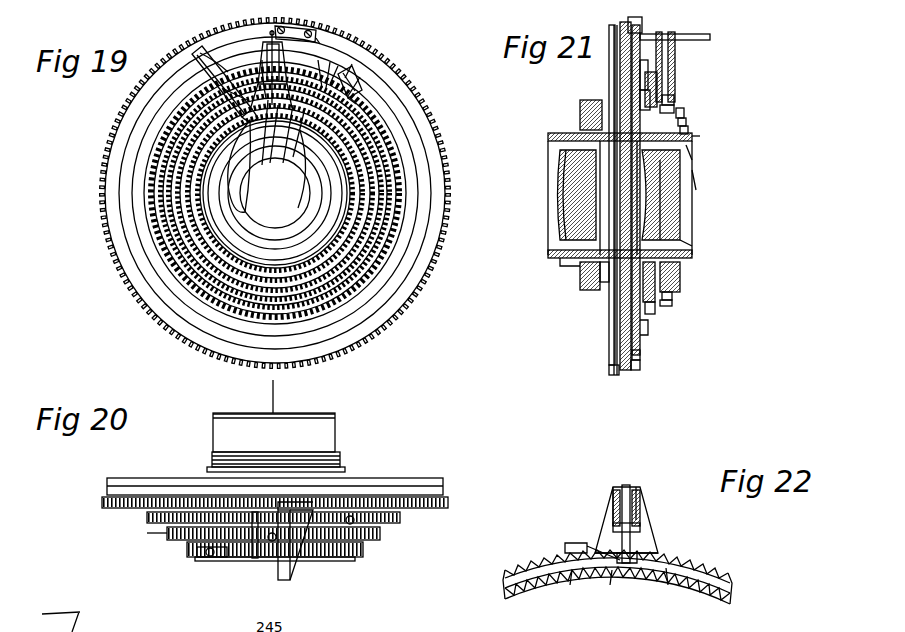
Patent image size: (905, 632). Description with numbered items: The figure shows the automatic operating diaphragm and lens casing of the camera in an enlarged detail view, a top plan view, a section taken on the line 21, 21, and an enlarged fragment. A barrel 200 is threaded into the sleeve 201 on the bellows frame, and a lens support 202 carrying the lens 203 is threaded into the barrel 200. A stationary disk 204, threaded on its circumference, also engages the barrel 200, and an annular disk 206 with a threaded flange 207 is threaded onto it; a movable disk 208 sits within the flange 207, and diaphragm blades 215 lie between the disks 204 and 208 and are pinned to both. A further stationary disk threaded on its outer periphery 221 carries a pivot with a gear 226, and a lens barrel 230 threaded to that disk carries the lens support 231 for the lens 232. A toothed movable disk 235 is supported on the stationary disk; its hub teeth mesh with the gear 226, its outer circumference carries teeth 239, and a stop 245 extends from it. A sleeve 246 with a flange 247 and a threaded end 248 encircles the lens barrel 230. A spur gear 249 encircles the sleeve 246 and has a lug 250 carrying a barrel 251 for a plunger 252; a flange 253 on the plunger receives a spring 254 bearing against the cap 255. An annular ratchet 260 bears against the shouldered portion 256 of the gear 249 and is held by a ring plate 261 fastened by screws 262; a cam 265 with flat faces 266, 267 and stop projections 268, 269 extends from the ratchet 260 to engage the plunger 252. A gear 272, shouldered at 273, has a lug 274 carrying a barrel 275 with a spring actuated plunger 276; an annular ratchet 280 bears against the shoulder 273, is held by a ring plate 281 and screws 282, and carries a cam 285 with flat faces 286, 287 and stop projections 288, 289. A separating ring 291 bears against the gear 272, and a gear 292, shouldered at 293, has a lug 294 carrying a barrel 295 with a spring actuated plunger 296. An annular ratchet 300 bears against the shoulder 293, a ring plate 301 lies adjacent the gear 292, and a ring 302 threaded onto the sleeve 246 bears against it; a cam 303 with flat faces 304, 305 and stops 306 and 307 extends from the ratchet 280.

In FIG. 20, the section line 21 is at (273, 395).
In FIG. 20, the barrel 200 is at (336, 432).
In FIG. 21, the barrel 200 is at (590, 262).
In FIG. 20, the sleeve 201 is at (345, 467).
In FIG. 21, the sleeve 201 is at (586, 286).
In FIG. 20, the lens support 202 is at (300, 413).
In FIG. 21, the lens support 202 is at (552, 141).
In FIG. 21, the lens 203 is at (560, 205).
In FIG. 21, the stationary disk 204 is at (620, 338).
In FIG. 20, the annular disk 206 is at (140, 478).
In FIG. 21, the annular disk 206 is at (612, 362).
In FIG. 20, the threaded flange 207 is at (107, 488).
In FIG. 21, the threaded flange 207 is at (618, 376).
In FIG. 21, the movable disk 208 is at (640, 340).
In FIG. 21, the blades 215 is at (618, 312).
In FIG. 21, the outer periphery 221 is at (640, 356).
In FIG. 21, the gear 226 is at (648, 330).
In FIG. 21, the lens barrel 230 is at (661, 228).
In FIG. 21, the lens support 231 is at (690, 250).
In FIG. 21, the lens 232 is at (680, 196).
In FIG. 19, the toothed movable disk 235 is at (275, 193).
In FIG. 21, the toothed movable disk 235 is at (640, 372).
In FIG. 19, the teeth 239 is at (426, 262).
In FIG. 20, the teeth 239 is at (450, 502).
In FIG. 21, the teeth 239 is at (642, 22).
In FIG. 19, the stop 245 is at (316, 38).
In FIG. 20, the stop 245 is at (290, 578).
In FIG. 21, the stop 245 is at (710, 38).
In FIG. 21, the sleeve 246 is at (690, 262).
In FIG. 21, the flange 247 is at (612, 284).
In FIG. 21, the threaded end 248 is at (694, 140).
In FIG. 19, the spur gear 249 is at (383, 153).
In FIG. 20, the spur gear 249 is at (400, 515).
In FIG. 21, the spur gear 249 is at (645, 80).
In FIG. 22, the spur gear 249 is at (700, 562).
In FIG. 19, the lug 250 is at (358, 92).
In FIG. 22, the lug 250 is at (655, 541).
In FIG. 19, the barrel 251 is at (362, 78).
In FIG. 20, the barrel 251 is at (350, 558).
In FIG. 22, the barrel 251 is at (641, 506).
In FIG. 19, the plunger 252 is at (352, 64).
In FIG. 22, the plunger 252 is at (626, 485).
In FIG. 22, the flange 253 is at (613, 528).
In FIG. 22, the spring 254 is at (613, 493).
In FIG. 22, the cap 255 is at (636, 487).
In FIG. 21, the shouldered portion 256 is at (655, 312).
In FIG. 19, the annular ratchet 260 is at (380, 168).
In FIG. 20, the annular ratchet 260 is at (385, 535).
In FIG. 21, the annular ratchet 260 is at (640, 65).
In FIG. 22, the annular ratchet 260 is at (731, 590).
In FIG. 21, the ring plate 261 is at (640, 95).
In FIG. 21, the screws 262 is at (675, 78).
In FIG. 19, the cam 265 is at (338, 69).
In FIG. 22, the cam 265 is at (610, 586).
In FIG. 22, the flat face 266 is at (570, 586).
In FIG. 22, the flat face 267 is at (623, 565).
In FIG. 19, the stop projection 268 is at (308, 69).
In FIG. 22, the stop projection 268 is at (565, 545).
In FIG. 19, the stop projection 269 is at (360, 77).
In FIG. 22, the stop projection 269 is at (668, 586).
In FIG. 19, the gear 272 is at (366, 248).
In FIG. 20, the gear 272 is at (147, 533).
In FIG. 21, the gear 272 is at (672, 302).
In FIG. 21, the shouldered portion 273 is at (672, 291).
In FIG. 19, the lug 274 is at (283, 32).
In FIG. 19, the barrel 275 is at (262, 60).
In FIG. 20, the barrel 275 is at (262, 560).
In FIG. 19, the spring actuated plunger 276 is at (271, 22).
In FIG. 19, the annular ratchet 280 is at (366, 218).
In FIG. 20, the annular ratchet 280 is at (375, 545).
In FIG. 21, the annular ratchet 280 is at (674, 100).
In FIG. 21, the ring plate 281 is at (674, 109).
In FIG. 21, the screws 282 is at (584, 112).
In FIG. 19, the cam 285 is at (269, 140).
In FIG. 19, the flat face 286 is at (246, 166).
In FIG. 19, the flat face 287 is at (290, 152).
In FIG. 19, the stop projection 288 is at (263, 163).
In FIG. 19, the stop projection 289 is at (292, 175).
In FIG. 21, the separating ring 291 is at (690, 156).
In FIG. 19, the gear 292 is at (333, 267).
In FIG. 20, the gear 292 is at (365, 553).
In FIG. 21, the gear 292 is at (684, 112).
In FIG. 21, the shouldered portion 293 is at (682, 282).
In FIG. 19, the lug 294 is at (222, 88).
In FIG. 19, the barrel 295 is at (215, 77).
In FIG. 20, the barrel 295 is at (214, 560).
In FIG. 19, the spring actuated plunger 296 is at (200, 53).
In FIG. 19, the annular ratchet 300 is at (300, 262).
In FIG. 20, the annular ratchet 300 is at (200, 555).
In FIG. 21, the annular ratchet 300 is at (686, 120).
In FIG. 21, the ring plate 301 is at (688, 128).
In FIG. 19, the ring 302 is at (233, 247).
In FIG. 21, the ring 302 is at (695, 182).
In FIG. 19, the cam 303 is at (230, 162).
In FIG. 19, the flat face 304 is at (235, 142).
In FIG. 19, the flat face 305 is at (235, 190).
In FIG. 19, the stop 306 is at (240, 128).
In FIG. 19, the stop 307 is at (230, 98).